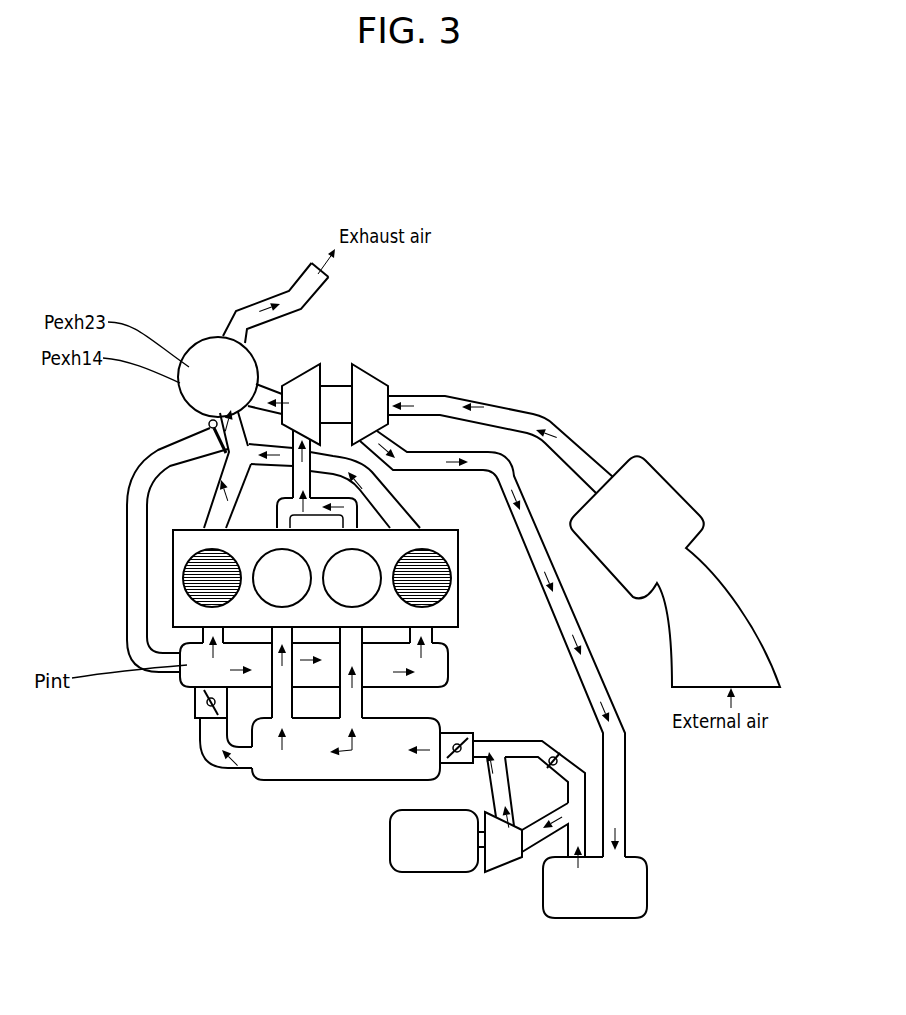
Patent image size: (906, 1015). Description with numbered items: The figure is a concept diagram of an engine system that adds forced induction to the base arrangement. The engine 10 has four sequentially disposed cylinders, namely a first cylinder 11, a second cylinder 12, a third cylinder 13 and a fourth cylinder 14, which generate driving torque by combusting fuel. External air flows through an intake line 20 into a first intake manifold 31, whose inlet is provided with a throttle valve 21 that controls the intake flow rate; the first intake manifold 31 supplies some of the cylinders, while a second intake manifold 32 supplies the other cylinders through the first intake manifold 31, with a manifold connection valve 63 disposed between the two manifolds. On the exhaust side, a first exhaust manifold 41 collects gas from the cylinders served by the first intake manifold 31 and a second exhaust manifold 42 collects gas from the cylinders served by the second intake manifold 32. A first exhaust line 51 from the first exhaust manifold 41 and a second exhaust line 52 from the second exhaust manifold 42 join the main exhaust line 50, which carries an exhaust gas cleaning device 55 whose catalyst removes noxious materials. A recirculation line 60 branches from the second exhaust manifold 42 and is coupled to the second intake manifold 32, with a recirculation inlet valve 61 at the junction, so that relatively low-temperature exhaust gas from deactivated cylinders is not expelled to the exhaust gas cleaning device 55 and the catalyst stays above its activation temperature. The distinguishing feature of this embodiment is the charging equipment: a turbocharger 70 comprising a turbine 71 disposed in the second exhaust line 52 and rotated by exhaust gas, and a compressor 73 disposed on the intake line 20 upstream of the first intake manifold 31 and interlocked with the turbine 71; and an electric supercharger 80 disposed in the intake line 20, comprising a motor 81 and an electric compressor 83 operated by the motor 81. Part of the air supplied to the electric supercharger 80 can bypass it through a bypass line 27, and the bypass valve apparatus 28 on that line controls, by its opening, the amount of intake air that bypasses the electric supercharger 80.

The engine 10 is at (170, 589).
The first cylinder 11 is at (183, 568).
The second cylinder 12 is at (261, 599).
The third cylinder 13 is at (373, 600).
The fourth cylinder 14 is at (440, 563).
The intake line 20 is at (488, 406).
The throttle valve 21 is at (463, 733).
The supercharger outlet line 27 is at (515, 741).
The bypass valve 28 is at (556, 752).
The first intake manifold 31 is at (284, 781).
The second intake manifold 32 is at (180, 685).
The first exhaust manifold 41 is at (277, 518).
The second exhaust manifold 42 is at (197, 523).
The main exhaust line 50 is at (281, 300).
The first exhaust line 51 is at (263, 388).
The second exhaust line 52 is at (211, 421).
The exhaust gas cleaning device 55 is at (189, 349).
The recirculation line 60 is at (136, 484).
The recirculation inlet valve 61 is at (222, 451).
The manifold connection valve 63 is at (195, 716).
The turbocharger 70 is at (353, 302).
The turbine 71 is at (308, 376).
The compressor 73 is at (373, 378).
The electric supercharger 80 is at (511, 930).
The motor 81 is at (445, 874).
The electric compressor 83 is at (495, 873).